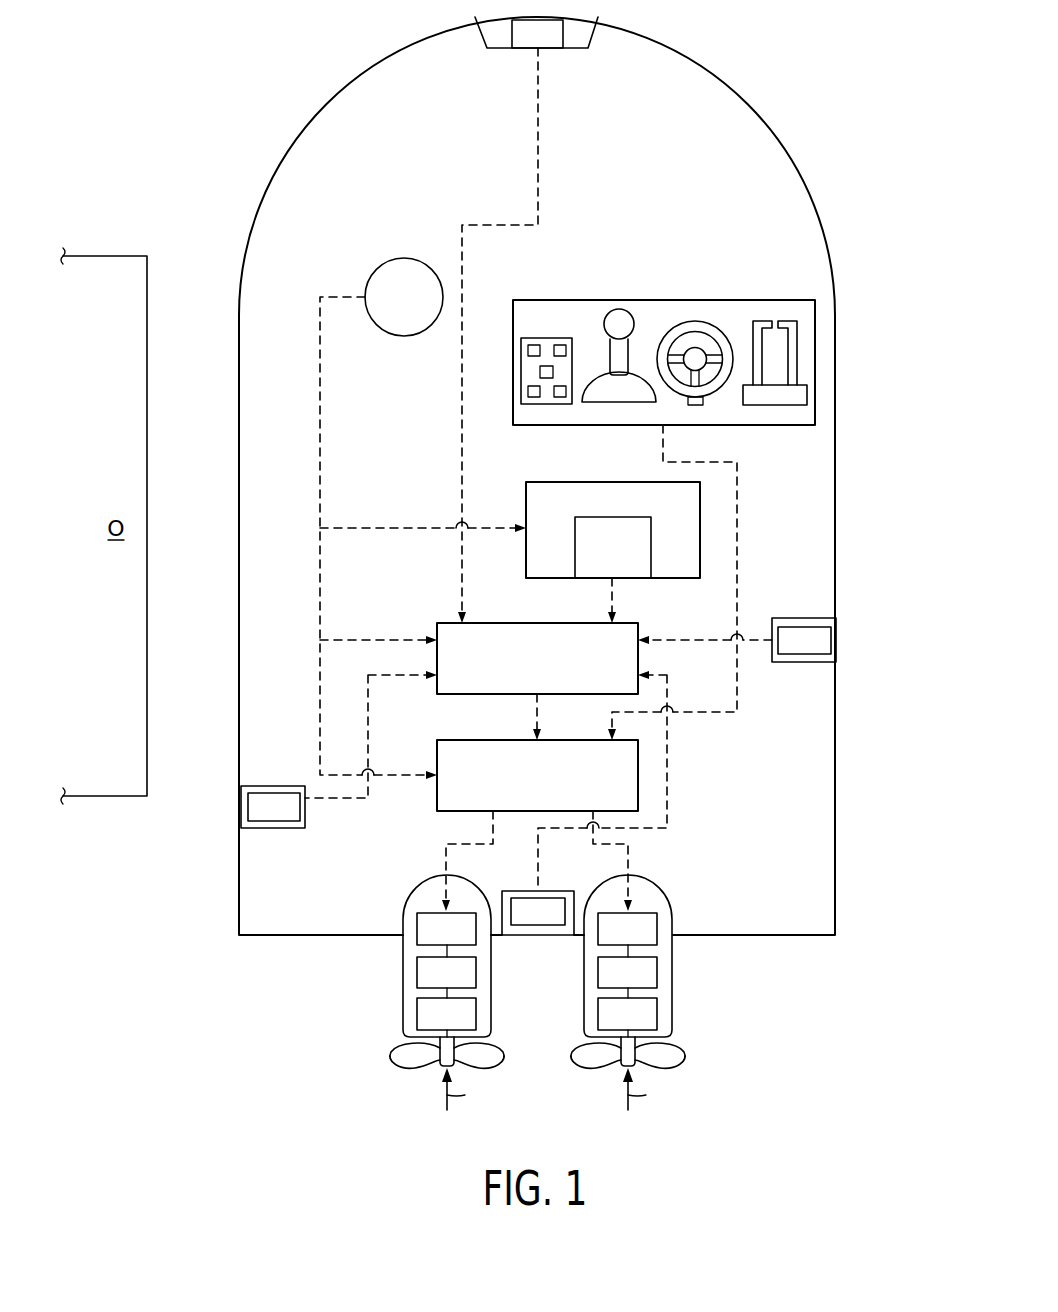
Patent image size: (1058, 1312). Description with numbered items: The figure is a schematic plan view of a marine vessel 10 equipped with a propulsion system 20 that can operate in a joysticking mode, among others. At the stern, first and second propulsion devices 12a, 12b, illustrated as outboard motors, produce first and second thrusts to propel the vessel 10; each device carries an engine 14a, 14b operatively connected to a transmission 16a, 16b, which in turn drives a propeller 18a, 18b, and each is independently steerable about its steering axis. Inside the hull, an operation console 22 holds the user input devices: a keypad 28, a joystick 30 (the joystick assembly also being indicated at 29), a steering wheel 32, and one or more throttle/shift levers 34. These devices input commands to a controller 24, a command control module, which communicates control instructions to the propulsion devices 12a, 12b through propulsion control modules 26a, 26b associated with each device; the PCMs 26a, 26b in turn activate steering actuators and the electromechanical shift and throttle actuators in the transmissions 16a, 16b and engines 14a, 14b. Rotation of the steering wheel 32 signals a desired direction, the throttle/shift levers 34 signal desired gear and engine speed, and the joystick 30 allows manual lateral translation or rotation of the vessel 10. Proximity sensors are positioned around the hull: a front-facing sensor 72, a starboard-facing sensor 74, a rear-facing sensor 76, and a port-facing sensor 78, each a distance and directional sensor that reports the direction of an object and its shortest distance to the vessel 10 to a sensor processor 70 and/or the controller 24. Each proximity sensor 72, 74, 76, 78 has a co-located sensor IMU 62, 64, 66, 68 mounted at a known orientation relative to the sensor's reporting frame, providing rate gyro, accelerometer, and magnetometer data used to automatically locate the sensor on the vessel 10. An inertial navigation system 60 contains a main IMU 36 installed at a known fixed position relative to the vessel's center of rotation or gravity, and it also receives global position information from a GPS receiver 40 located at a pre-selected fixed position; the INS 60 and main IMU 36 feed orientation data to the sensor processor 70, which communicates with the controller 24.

The marine vessel 10 is at (816, 203).
The propulsion system 20 is at (719, 135).
The operation console 22 is at (626, 300).
The controller 24 is at (638, 767).
The keypad 28 is at (540, 338).
The joystick 29 is at (592, 338).
The joystick 30 is at (630, 356).
The steering wheel 32 is at (697, 321).
The throttle/shift levers 34 is at (760, 321).
The main IMU 36 is at (612, 517).
The GPS receiver 40 is at (386, 267).
The inertial navigation system 60 is at (548, 482).
The sensor IMU 62 is at (549, 50).
The sensor IMU 64 is at (793, 618).
The sensor IMU 66 is at (548, 891).
The sensor IMU 68 is at (262, 828).
The sensor processor 70 is at (538, 623).
The front-facing proximity sensor 72 is at (572, 40).
The starboard-facing proximity sensor 74 is at (820, 618).
The rear-facing proximity sensor 76 is at (537, 935).
The port-facing proximity sensor 78 is at (258, 786).
The first propulsion device 12a is at (431, 877).
The second propulsion device 12b is at (643, 877).
The engine 14a is at (417, 970).
The engine 14b is at (657, 970).
The transmission 16a is at (417, 1014).
The transmission 16b is at (657, 1014).
The propeller 18a is at (391, 1055).
The propeller 18b is at (684, 1055).
The propulsion control module 26a is at (430, 913).
The propulsion control module 26b is at (646, 913).